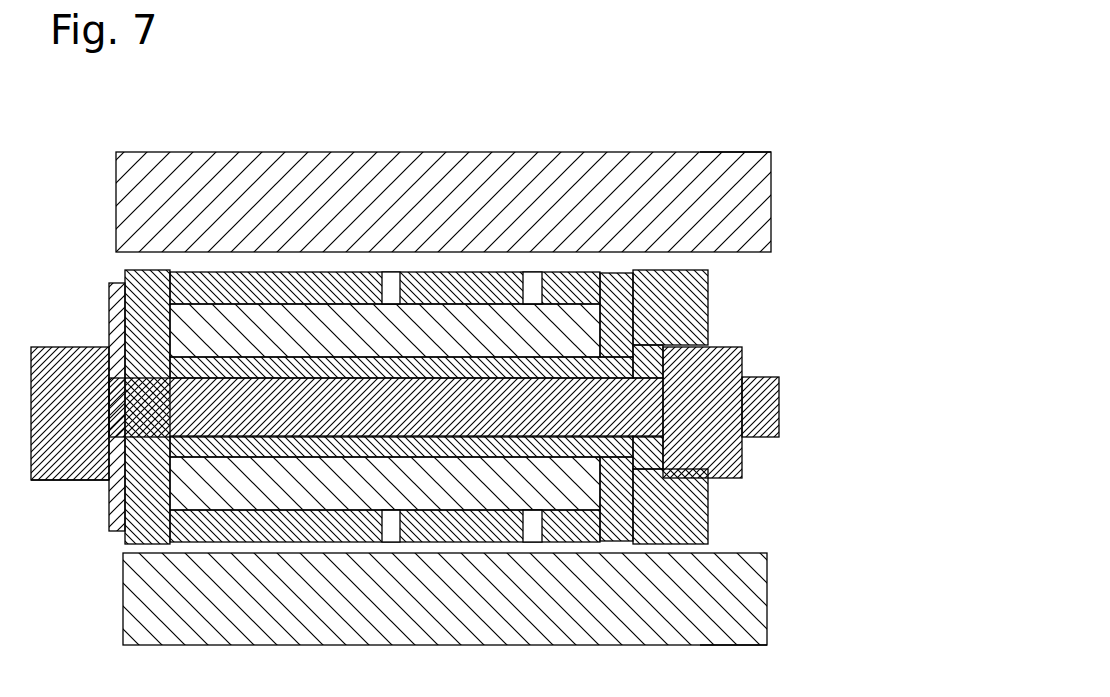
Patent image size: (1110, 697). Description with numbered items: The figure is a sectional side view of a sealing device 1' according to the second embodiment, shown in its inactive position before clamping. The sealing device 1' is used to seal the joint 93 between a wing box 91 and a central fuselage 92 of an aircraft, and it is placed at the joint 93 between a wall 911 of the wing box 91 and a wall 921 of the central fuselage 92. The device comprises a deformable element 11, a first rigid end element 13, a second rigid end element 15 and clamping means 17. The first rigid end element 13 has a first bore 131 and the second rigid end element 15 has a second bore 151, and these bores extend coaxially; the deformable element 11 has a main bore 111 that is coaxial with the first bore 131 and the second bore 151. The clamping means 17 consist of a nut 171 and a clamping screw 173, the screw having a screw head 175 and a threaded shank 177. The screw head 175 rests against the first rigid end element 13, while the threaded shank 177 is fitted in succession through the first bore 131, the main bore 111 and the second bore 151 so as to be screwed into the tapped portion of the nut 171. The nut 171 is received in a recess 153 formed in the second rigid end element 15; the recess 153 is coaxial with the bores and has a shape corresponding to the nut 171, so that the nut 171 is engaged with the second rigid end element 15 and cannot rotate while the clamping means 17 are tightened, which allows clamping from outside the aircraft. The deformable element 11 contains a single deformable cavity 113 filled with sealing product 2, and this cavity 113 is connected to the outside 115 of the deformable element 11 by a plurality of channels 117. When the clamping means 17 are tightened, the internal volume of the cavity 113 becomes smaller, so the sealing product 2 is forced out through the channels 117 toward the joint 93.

The sealing device 1' is at (453, 318).
The sealing product 2 is at (347, 360).
The deformable element 11 is at (287, 287).
The main bore 111 is at (242, 382).
The deformable cavity 113 is at (497, 322).
The outside of the deformable element 115 is at (600, 275).
The channel 117 is at (380, 322).
The first rigid end element 13 is at (157, 283).
The first bore 131 is at (122, 330).
The second rigid end element 15 is at (701, 312).
The second bore 151 is at (662, 365).
The recess 153 is at (706, 335).
The clamping means 17 is at (453, 426).
The nut 171 is at (722, 360).
The clamping screw 173 is at (66, 486).
The screw head 175 is at (65, 347).
The threaded shank 177 is at (774, 396).
The wing box 91 is at (777, 590).
The wall of the wing box 911 is at (755, 625).
The central fuselage 92 is at (771, 188).
The wall of the central fuselage 921 is at (746, 158).
The joint 93 is at (762, 510).